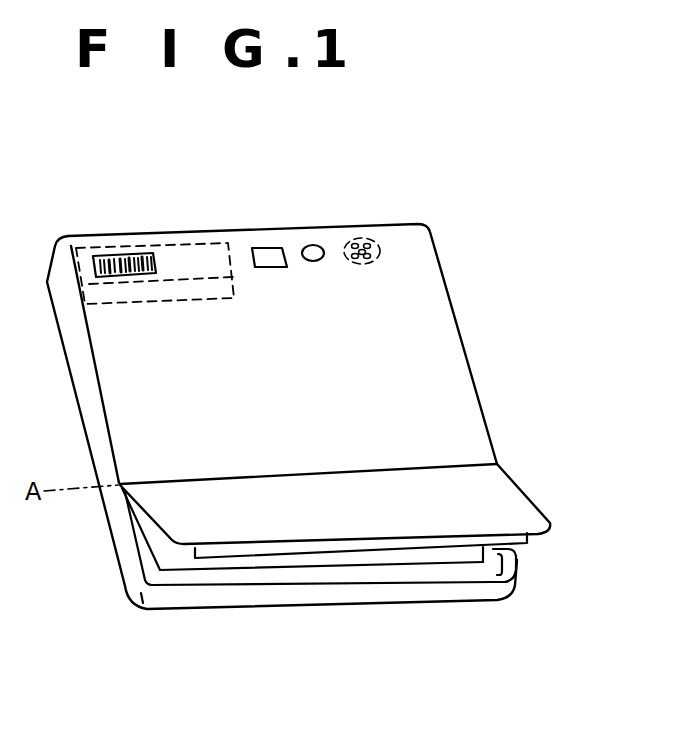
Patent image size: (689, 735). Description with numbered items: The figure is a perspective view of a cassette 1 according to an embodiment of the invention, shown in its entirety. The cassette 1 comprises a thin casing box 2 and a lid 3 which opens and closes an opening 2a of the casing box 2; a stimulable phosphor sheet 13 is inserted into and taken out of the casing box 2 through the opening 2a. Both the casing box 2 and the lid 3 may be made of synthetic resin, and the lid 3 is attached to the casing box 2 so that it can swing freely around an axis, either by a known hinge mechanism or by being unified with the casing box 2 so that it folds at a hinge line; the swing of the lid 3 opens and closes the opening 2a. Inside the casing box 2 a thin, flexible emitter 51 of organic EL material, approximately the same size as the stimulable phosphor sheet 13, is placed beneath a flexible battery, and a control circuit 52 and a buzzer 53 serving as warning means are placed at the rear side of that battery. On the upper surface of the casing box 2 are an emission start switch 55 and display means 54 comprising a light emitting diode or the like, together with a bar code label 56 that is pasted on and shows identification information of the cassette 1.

The cassette 1 is at (248, 120).
The casing box 2 is at (120, 583).
The opening 2a is at (310, 582).
The lid 3 is at (515, 503).
The stimulable phosphor sheet 13 is at (412, 558).
The emitter 51 is at (470, 572).
The control circuit 52 is at (177, 255).
The buzzer 53 is at (368, 237).
The display means 54 is at (265, 248).
The emission start switch 55 is at (317, 245).
The bar code label 56 is at (109, 257).